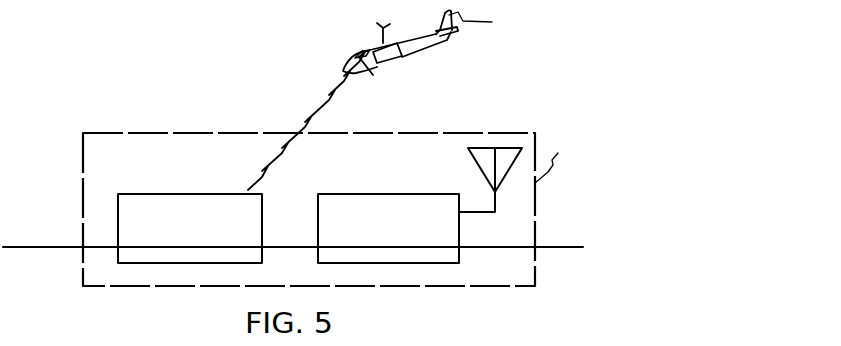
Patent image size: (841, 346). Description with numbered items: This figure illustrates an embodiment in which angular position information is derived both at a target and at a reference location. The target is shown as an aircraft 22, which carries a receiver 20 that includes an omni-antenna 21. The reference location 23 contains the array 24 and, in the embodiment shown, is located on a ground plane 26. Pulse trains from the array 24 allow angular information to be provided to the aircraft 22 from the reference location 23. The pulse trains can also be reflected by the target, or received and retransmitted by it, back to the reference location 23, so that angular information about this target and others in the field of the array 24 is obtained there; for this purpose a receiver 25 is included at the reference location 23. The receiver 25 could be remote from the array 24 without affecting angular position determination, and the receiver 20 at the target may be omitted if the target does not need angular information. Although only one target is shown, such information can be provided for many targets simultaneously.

The receiver 20 is at (400, 58).
The omni-antenna 21 is at (385, 23).
The aircraft 22 is at (443, 42).
The reference location 23 is at (82, 153).
The array 24 is at (153, 192).
The receiver 25 is at (380, 191).
The ground plane 26 is at (553, 248).